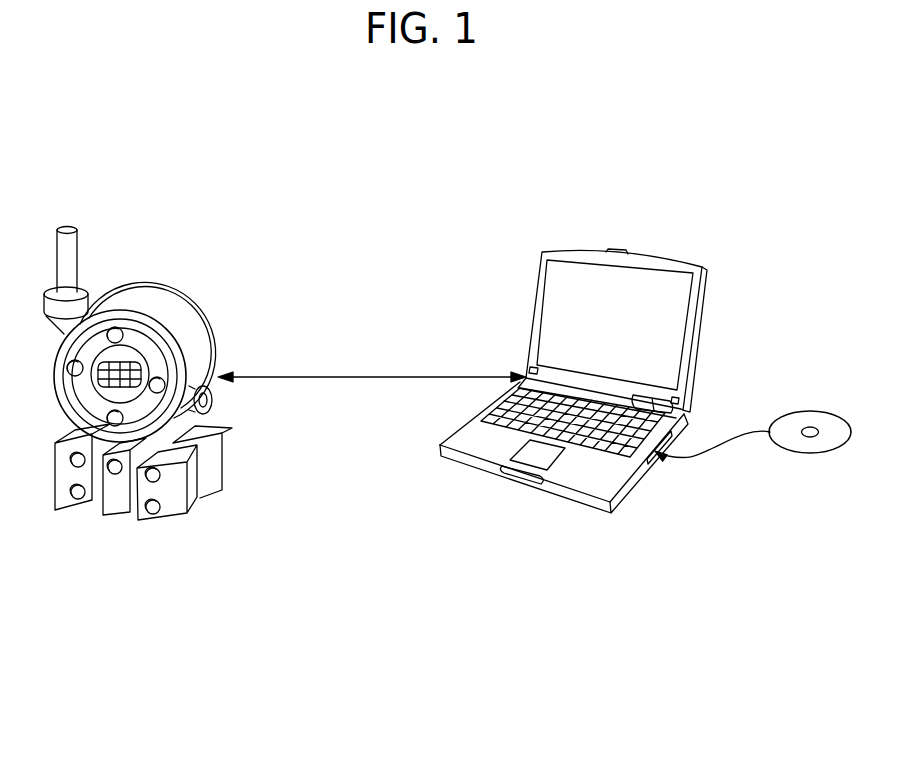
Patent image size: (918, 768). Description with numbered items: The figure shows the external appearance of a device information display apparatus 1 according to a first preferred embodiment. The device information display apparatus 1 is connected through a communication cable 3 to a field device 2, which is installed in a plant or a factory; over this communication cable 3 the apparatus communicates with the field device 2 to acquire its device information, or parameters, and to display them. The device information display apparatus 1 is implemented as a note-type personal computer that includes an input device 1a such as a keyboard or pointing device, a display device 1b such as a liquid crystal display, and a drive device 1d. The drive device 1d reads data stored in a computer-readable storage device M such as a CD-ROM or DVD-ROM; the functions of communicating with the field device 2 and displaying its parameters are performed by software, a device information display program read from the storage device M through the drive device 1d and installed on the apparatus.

The device information display apparatus 1 is at (593, 380).
The input device 1a is at (573, 467).
The display device 1b is at (565, 313).
The drive device 1d is at (643, 465).
The field device 2 is at (163, 290).
The communication cable 3 is at (363, 377).
The storage device M is at (812, 418).